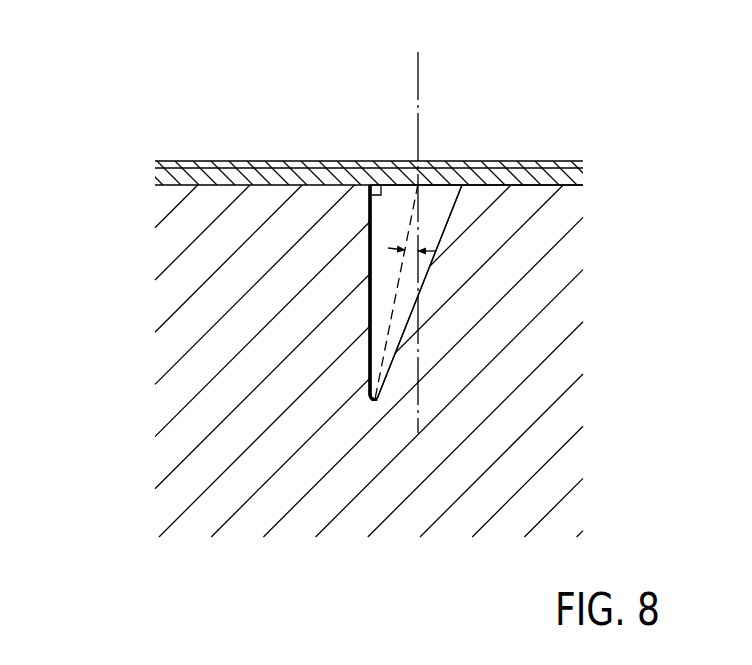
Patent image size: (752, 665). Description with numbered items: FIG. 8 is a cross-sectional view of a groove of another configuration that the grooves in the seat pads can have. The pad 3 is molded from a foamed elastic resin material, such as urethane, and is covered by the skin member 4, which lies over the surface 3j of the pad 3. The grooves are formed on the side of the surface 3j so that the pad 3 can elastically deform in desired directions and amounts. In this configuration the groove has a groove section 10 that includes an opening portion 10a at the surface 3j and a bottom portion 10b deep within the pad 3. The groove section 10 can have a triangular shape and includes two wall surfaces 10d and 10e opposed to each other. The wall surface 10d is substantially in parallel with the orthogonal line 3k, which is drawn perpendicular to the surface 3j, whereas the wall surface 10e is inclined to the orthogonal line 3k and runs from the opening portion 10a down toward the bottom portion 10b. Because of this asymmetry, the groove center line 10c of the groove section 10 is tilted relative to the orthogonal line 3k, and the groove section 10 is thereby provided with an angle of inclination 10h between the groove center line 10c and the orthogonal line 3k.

The pad 3 is at (255, 410).
The skin member 4 is at (215, 177).
The surface of the pad 3j is at (518, 184).
The orthogonal line 3k is at (418, 72).
The groove section 10 is at (366, 320).
The opening portion 10a is at (442, 187).
The bottom portion 10b is at (374, 401).
The groove center line 10c is at (406, 250).
The wall surface 10d is at (368, 362).
The wall surface 10e is at (405, 250).
The angle of inclination 10h is at (417, 297).